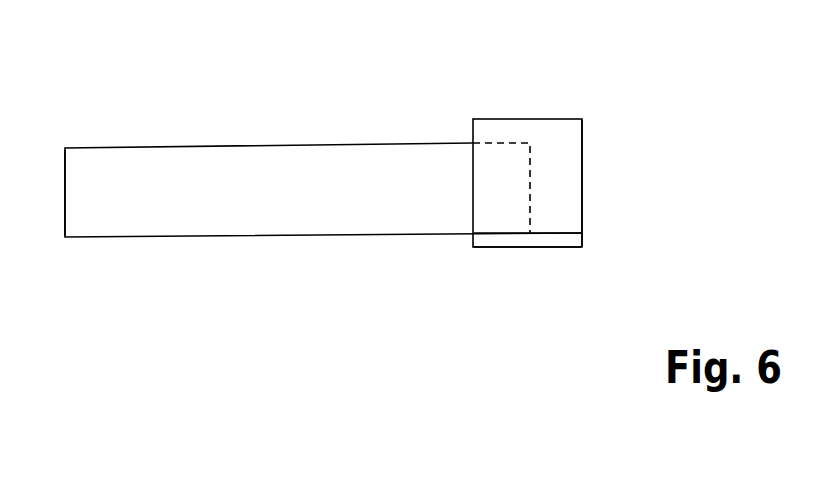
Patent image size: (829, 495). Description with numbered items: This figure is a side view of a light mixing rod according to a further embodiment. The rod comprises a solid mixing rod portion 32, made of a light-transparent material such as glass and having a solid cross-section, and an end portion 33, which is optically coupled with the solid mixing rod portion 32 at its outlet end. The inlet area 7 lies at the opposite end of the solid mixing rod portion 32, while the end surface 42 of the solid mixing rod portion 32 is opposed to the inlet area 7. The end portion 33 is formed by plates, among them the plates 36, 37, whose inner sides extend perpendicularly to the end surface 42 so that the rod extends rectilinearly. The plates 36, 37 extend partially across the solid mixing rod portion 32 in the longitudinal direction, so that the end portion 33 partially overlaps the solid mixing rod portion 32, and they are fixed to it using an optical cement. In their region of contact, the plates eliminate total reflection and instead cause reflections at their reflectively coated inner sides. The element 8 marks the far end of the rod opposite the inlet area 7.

The inlet area 7 is at (65, 208).
The second end 8 is at (582, 206).
The solid mixing rod portion 32 is at (243, 237).
The end portion 33 is at (508, 248).
The plate 36 is at (547, 247).
The plate 37 is at (506, 118).
The end surface 42 is at (533, 167).